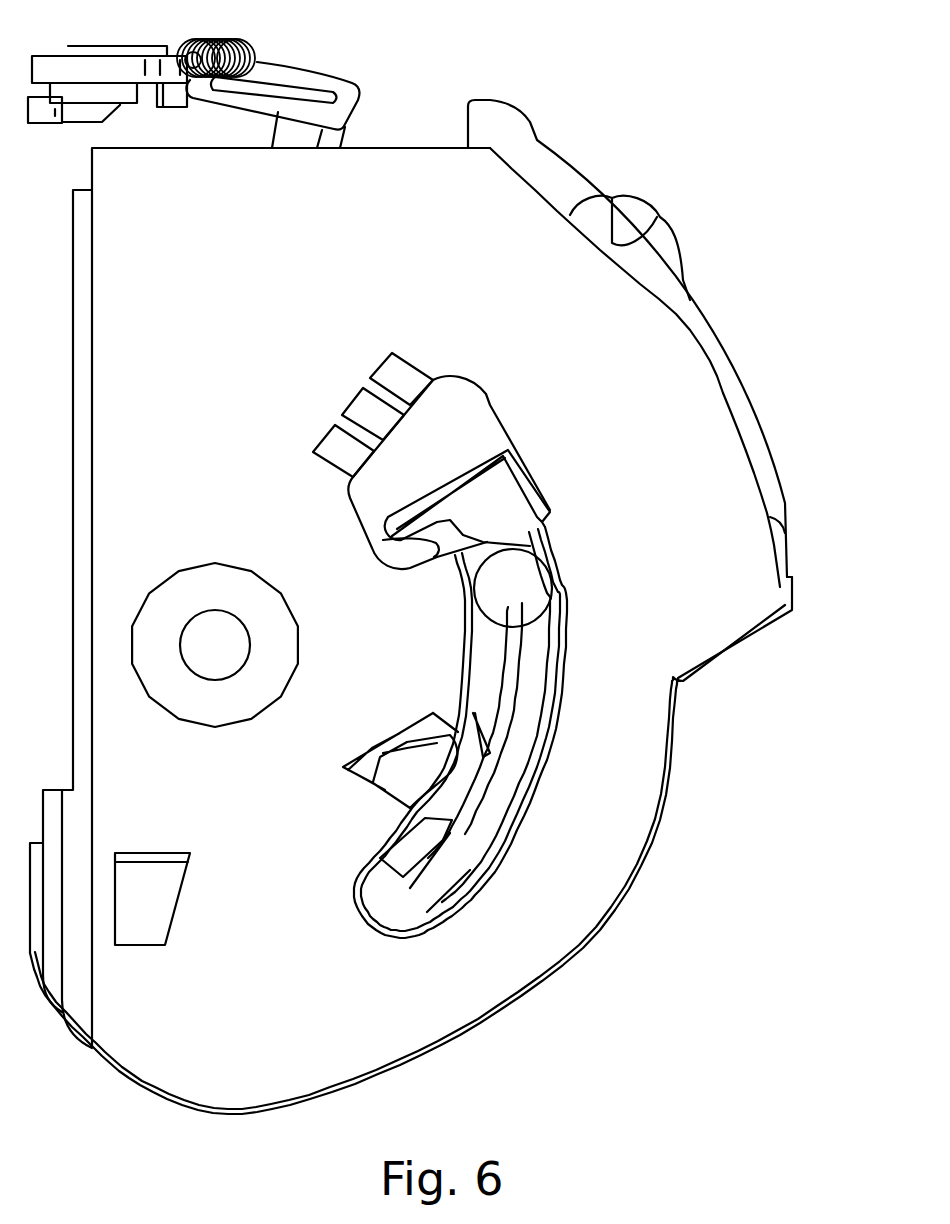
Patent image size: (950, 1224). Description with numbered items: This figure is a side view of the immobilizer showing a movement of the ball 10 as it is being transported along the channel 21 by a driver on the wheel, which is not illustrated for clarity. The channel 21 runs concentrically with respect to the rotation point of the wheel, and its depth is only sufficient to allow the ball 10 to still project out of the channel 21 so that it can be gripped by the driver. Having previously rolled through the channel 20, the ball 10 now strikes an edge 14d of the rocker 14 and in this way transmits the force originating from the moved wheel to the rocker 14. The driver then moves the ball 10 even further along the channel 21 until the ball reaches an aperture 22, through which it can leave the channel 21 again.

The ball 10 is at (513, 589).
The rocker 14 is at (505, 502).
The edge of the rocker 14d is at (527, 543).
The channel 20 is at (430, 760).
The channel 21 is at (518, 728).
The aperture 22 is at (447, 423).